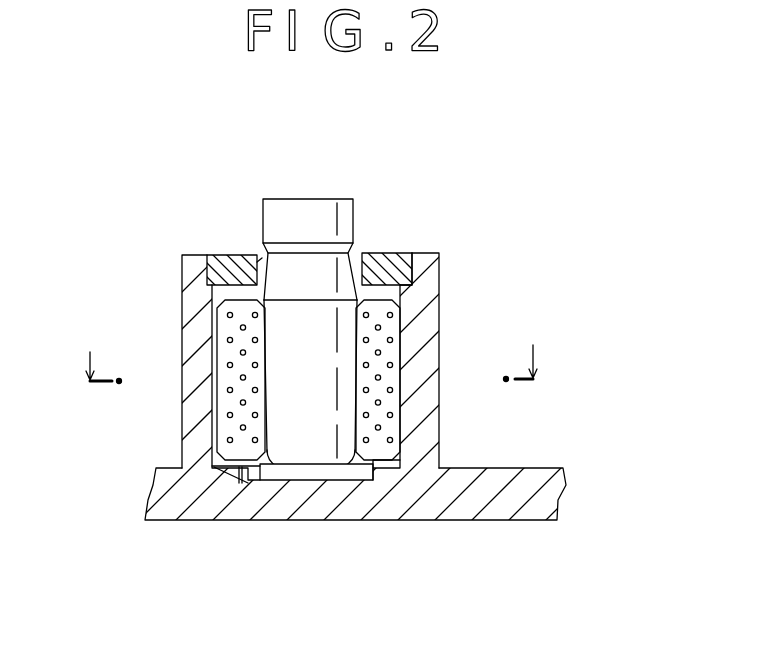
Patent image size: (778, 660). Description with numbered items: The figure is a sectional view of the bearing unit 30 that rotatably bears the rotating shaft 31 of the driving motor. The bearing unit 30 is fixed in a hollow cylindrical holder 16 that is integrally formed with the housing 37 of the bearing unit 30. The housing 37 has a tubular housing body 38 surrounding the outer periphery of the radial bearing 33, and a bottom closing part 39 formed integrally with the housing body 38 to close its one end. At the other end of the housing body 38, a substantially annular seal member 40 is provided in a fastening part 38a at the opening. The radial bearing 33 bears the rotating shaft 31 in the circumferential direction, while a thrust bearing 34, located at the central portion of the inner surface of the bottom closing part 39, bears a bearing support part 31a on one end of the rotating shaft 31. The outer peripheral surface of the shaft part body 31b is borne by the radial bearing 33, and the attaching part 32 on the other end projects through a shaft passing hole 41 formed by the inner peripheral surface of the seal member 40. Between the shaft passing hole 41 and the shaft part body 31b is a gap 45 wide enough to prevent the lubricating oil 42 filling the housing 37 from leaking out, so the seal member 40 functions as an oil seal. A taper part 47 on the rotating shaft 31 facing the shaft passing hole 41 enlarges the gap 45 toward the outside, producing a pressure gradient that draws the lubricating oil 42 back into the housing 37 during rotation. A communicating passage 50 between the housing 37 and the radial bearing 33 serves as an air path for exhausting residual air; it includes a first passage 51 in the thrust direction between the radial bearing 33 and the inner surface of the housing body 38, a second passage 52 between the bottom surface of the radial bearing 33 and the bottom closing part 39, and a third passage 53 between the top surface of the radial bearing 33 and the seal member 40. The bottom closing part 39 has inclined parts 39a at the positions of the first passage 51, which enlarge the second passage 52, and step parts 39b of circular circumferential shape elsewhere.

The holder 16 is at (497, 488).
The bearing unit 30 is at (579, 206).
The rotating shaft 31 is at (343, 405).
The bearing support part 31a is at (322, 476).
The shaft part body 31b is at (345, 368).
The attaching part 32 is at (333, 222).
The radial bearing 33 is at (402, 308).
The thrust bearing 34 is at (285, 480).
The housing 37 is at (197, 432).
The housing body 38 is at (197, 403).
The fastening part 38a is at (405, 270).
The bottom closing part 39 is at (325, 505).
The inclined parts 39a is at (235, 478).
The step parts 39b is at (387, 470).
The seal member 40 is at (412, 254).
The shaft passing hole 41 is at (262, 258).
The lubricating oil 42 is at (240, 482).
The gap 45 is at (270, 270).
The taper part 47 is at (350, 258).
The communicating passage 50 is at (218, 330).
The first passage 51 is at (220, 360).
The second passage 52 is at (242, 482).
The third passage 53 is at (243, 305).